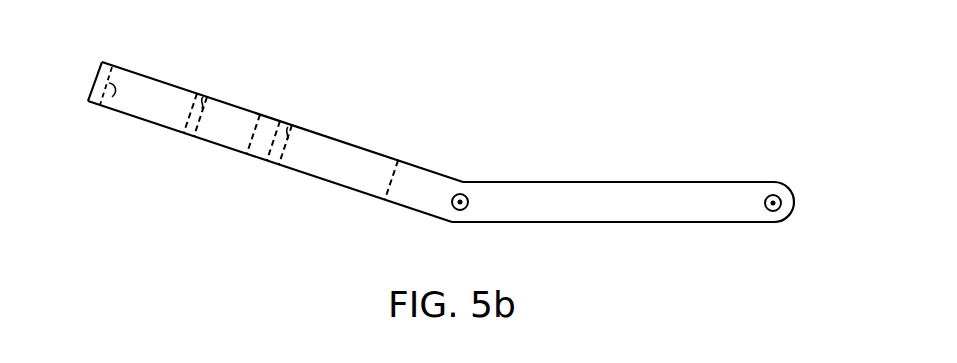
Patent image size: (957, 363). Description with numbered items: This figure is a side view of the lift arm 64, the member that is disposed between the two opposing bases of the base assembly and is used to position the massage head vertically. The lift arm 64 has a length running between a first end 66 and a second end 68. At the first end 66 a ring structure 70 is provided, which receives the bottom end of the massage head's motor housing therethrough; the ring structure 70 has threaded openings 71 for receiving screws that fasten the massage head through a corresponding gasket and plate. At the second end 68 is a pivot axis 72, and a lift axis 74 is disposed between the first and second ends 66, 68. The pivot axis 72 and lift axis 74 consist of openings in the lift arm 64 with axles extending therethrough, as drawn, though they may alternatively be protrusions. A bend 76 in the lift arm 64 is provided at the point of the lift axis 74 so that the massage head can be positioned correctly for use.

The lift arm 64 is at (612, 152).
The first end 66 is at (125, 68).
The second end 68 is at (690, 181).
The ring structure 70 is at (106, 105).
The threaded openings 71 is at (203, 97).
The pivot axis 72 is at (781, 197).
The lift axis 74 is at (467, 194).
The bend 76 is at (453, 222).